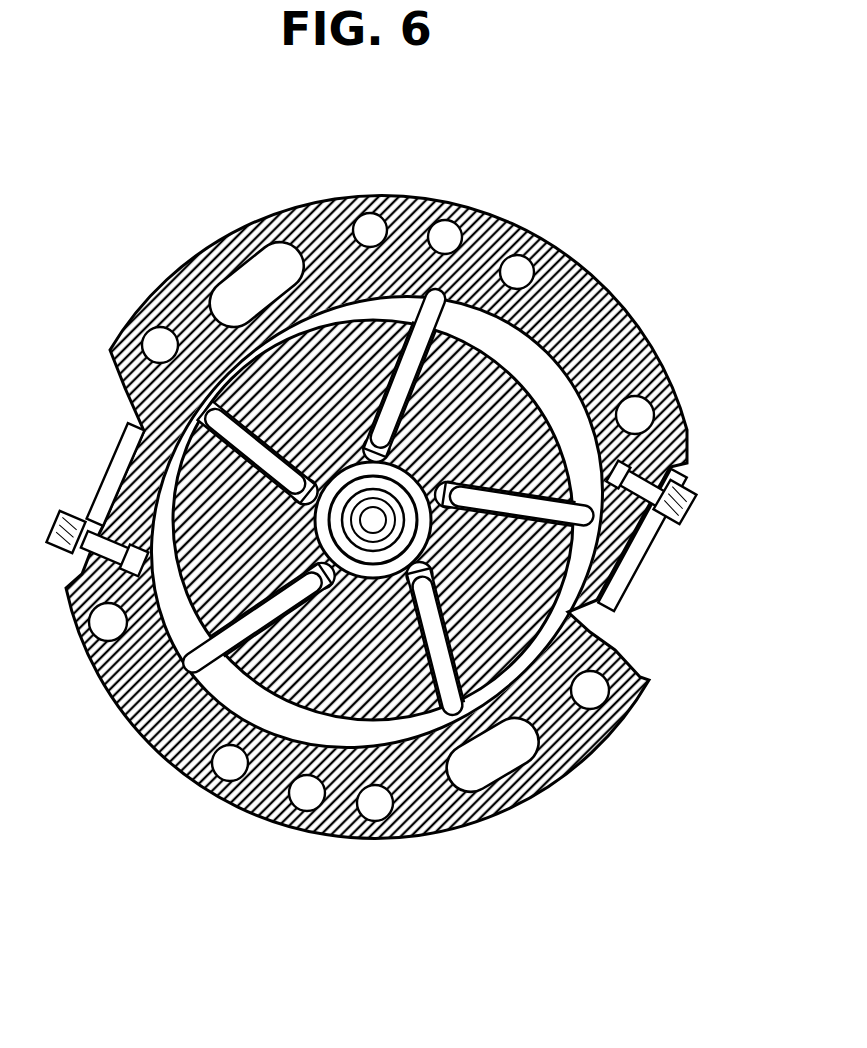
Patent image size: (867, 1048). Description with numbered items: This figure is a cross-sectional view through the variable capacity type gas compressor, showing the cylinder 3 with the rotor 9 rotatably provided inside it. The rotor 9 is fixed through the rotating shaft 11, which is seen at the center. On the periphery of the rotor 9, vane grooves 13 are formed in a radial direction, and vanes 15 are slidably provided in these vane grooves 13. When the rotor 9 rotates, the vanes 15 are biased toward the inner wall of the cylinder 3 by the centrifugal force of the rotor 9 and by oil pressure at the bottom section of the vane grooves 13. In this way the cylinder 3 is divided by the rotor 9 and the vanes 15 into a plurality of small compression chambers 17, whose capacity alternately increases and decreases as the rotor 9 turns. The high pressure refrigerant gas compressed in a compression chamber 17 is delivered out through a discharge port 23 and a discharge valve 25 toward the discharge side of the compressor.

The cylinder 3 is at (620, 330).
The rotor 9 is at (400, 717).
The rotating shaft 11 is at (372, 522).
The vane grooves 13 is at (470, 347).
The vanes 15 is at (413, 292).
The compression chambers 17 is at (362, 305).
The discharge port 23 is at (623, 588).
The discharge valve 25 is at (640, 557).